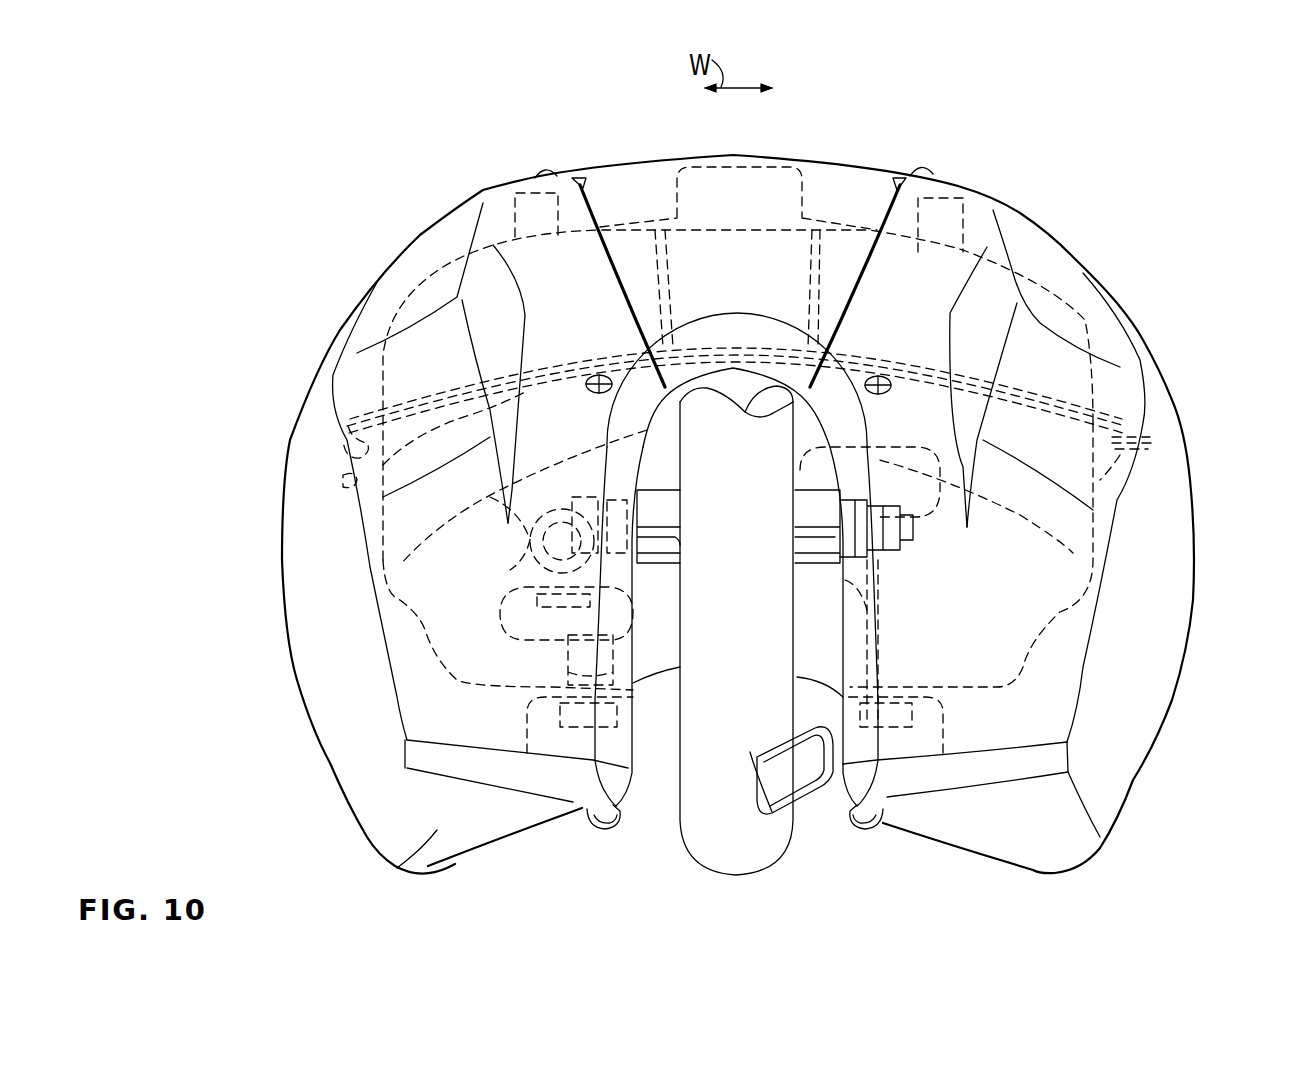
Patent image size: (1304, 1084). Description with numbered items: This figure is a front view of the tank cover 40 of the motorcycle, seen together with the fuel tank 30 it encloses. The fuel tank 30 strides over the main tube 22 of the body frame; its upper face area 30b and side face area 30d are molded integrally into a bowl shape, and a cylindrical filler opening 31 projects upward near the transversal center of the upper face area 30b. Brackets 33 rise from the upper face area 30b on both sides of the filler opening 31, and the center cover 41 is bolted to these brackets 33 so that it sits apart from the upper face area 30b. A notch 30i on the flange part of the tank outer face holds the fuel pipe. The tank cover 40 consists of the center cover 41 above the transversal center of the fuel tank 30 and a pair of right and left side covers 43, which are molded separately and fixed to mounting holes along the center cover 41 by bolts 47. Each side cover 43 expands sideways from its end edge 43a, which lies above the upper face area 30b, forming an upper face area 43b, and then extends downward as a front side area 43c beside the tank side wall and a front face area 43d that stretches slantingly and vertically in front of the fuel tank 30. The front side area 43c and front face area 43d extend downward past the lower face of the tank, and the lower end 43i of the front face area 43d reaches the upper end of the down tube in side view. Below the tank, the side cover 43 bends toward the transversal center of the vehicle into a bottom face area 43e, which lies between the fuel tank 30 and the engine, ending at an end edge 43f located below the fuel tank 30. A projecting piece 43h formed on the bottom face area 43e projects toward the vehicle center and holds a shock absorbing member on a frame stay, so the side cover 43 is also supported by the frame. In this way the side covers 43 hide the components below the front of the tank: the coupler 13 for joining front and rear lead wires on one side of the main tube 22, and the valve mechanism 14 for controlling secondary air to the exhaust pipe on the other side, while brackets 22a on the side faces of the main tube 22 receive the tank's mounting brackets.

The coupler 13 is at (877, 655).
The valve mechanism 14 is at (523, 587).
The main tube 22 is at (673, 778).
The bracket 22a is at (810, 497).
The fuel tank 30 is at (634, 212).
The upper face area 30b is at (848, 187).
The side face area 30d is at (380, 387).
The notch 30i is at (1137, 435).
The filler opening 31 is at (757, 172).
The bracket 33 is at (512, 230).
The tank cover 40 is at (1136, 217).
The center cover 41 is at (786, 152).
The side cover 43 is at (408, 244).
The end edge 43a is at (580, 178).
The upper face area 43b is at (525, 176).
The front side area 43c is at (284, 494).
The front face area 43d is at (853, 595).
The bottom face area 43e is at (400, 868).
The end edge 43f is at (513, 843).
The projecting piece 43h is at (600, 832).
The lower end 43i is at (477, 775).
The bolt 47 is at (599, 374).